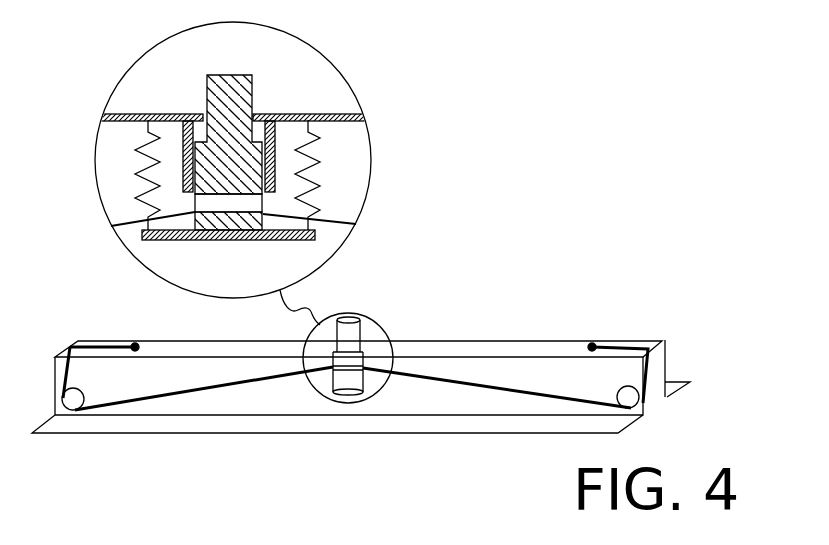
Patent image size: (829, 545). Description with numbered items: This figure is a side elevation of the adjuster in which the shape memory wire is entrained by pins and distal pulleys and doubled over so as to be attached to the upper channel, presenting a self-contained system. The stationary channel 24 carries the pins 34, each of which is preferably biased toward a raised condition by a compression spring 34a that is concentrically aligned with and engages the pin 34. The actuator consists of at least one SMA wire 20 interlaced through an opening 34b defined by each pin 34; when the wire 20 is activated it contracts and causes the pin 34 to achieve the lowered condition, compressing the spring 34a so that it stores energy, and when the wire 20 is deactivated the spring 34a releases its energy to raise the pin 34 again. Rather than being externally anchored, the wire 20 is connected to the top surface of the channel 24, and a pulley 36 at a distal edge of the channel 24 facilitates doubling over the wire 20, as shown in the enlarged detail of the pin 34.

The SMA wire 20 is at (123, 223).
The stationary channel 24 is at (327, 114).
The pin 34 is at (377, 318).
The compression spring 34a is at (302, 158).
The opening 34b is at (263, 197).
The pulley 36 is at (63, 393).